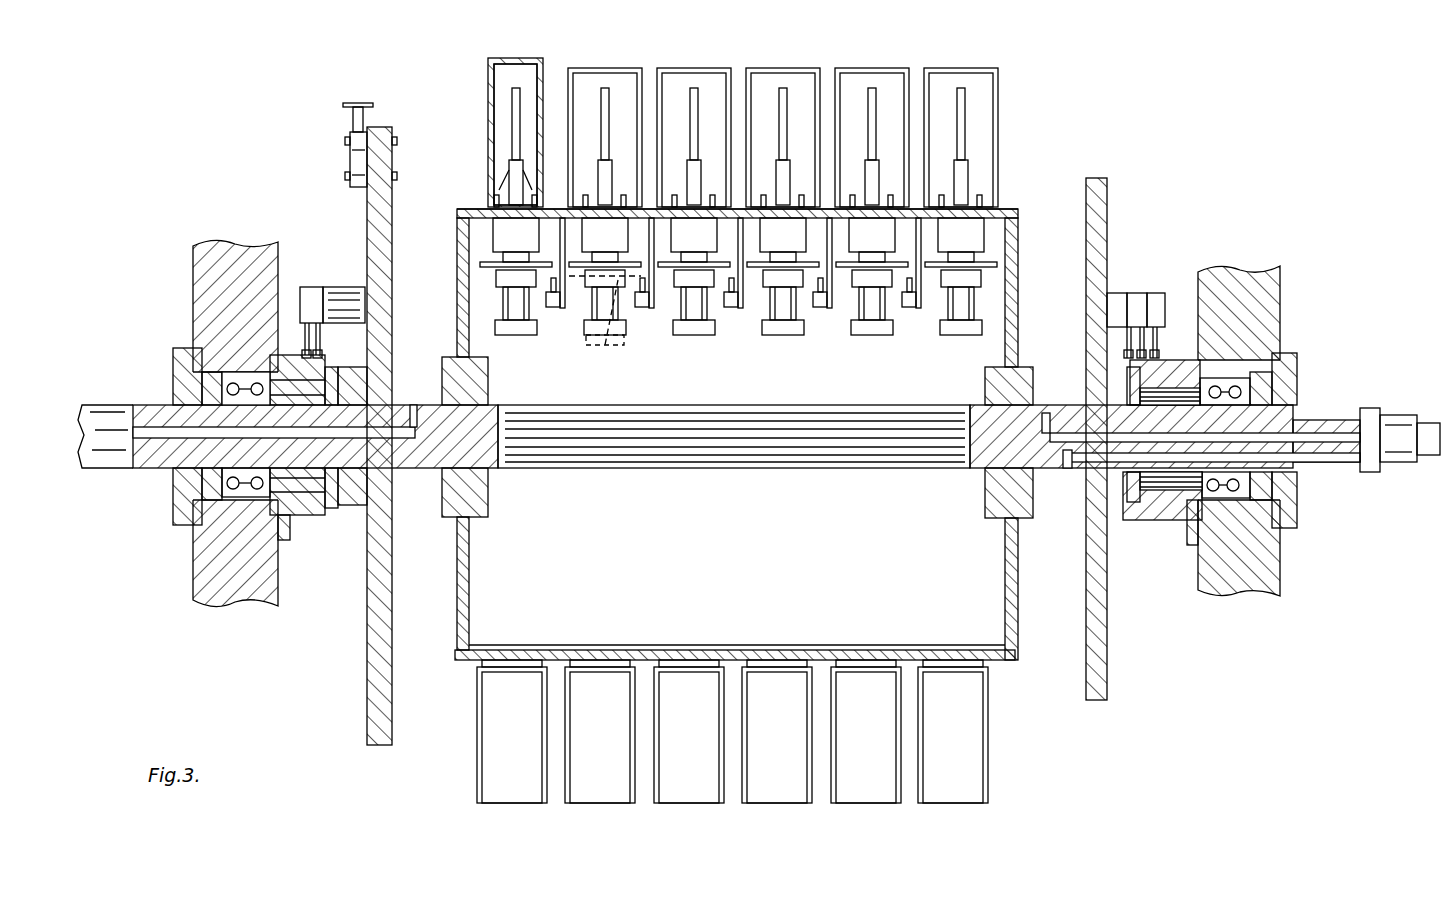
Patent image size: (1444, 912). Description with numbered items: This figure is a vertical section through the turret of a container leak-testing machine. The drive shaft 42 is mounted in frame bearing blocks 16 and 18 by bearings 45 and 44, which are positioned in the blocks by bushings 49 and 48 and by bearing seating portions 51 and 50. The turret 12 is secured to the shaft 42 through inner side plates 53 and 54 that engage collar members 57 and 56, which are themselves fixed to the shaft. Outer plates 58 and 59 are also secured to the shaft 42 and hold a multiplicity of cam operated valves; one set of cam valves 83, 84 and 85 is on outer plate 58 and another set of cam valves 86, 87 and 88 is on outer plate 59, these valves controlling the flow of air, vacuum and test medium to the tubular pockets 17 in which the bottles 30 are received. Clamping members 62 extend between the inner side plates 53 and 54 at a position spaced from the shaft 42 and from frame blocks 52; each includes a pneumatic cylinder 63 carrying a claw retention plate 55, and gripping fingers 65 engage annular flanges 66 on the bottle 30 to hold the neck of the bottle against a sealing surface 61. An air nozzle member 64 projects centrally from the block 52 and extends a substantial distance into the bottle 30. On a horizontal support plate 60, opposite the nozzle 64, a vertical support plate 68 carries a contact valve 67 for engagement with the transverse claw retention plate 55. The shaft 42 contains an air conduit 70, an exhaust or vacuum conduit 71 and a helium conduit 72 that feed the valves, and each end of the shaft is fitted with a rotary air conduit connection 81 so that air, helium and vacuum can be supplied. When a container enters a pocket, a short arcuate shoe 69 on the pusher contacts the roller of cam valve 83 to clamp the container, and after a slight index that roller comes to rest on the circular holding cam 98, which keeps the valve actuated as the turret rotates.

The turret 12 is at (737, 431).
The frame bearing block 16 is at (205, 270).
The tubular pocket 17 is at (756, 429).
The frame bearing block 18 is at (1280, 285).
The bottle 30 is at (528, 70).
The drive shaft 42 is at (723, 442).
The bearing 44 is at (1260, 392).
The bearing 45 is at (200, 510).
The bushing 48 is at (1297, 505).
The bushing 49 is at (178, 352).
The bearing seating portion 50 is at (1152, 520).
The bearing seating portion 51 is at (290, 528).
The frame block 52 is at (493, 240).
The inner side plate 53 is at (457, 325).
The inner side plate 54 is at (1018, 240).
The claw retention plate 55 is at (480, 265).
The collar member 56 is at (1018, 372).
The collar member 57 is at (452, 485).
The outer plate 58 is at (367, 222).
The outer plate 59 is at (1107, 235).
The horizontal support plate 60 is at (1005, 209).
The sealing surface 61 is at (505, 195).
The clamping member 62 is at (500, 232).
The pneumatic cylinder 63 is at (508, 303).
The air nozzle member 64 is at (497, 75).
The gripping finger 65 is at (495, 196).
The annular flange 66 is at (499, 190).
The contact valve 67 is at (640, 308).
The vertical support plate 68 is at (556, 310).
The arcuate shoe 69 is at (500, 175).
The air conduit 70 is at (158, 430).
The exhaust or vacuum conduit 71 is at (1298, 464).
The helium conduit 72 is at (1320, 444).
The rotary air conduit connection 81 is at (1395, 415).
The cam valve 83 is at (350, 160).
The cam valve 84 is at (306, 287).
The cam valve 85 is at (322, 287).
The cam valve 86 is at (1118, 293).
The cam valve 87 is at (1140, 293).
The cam valve 88 is at (1158, 293).
The circular holding cam 98 is at (358, 103).